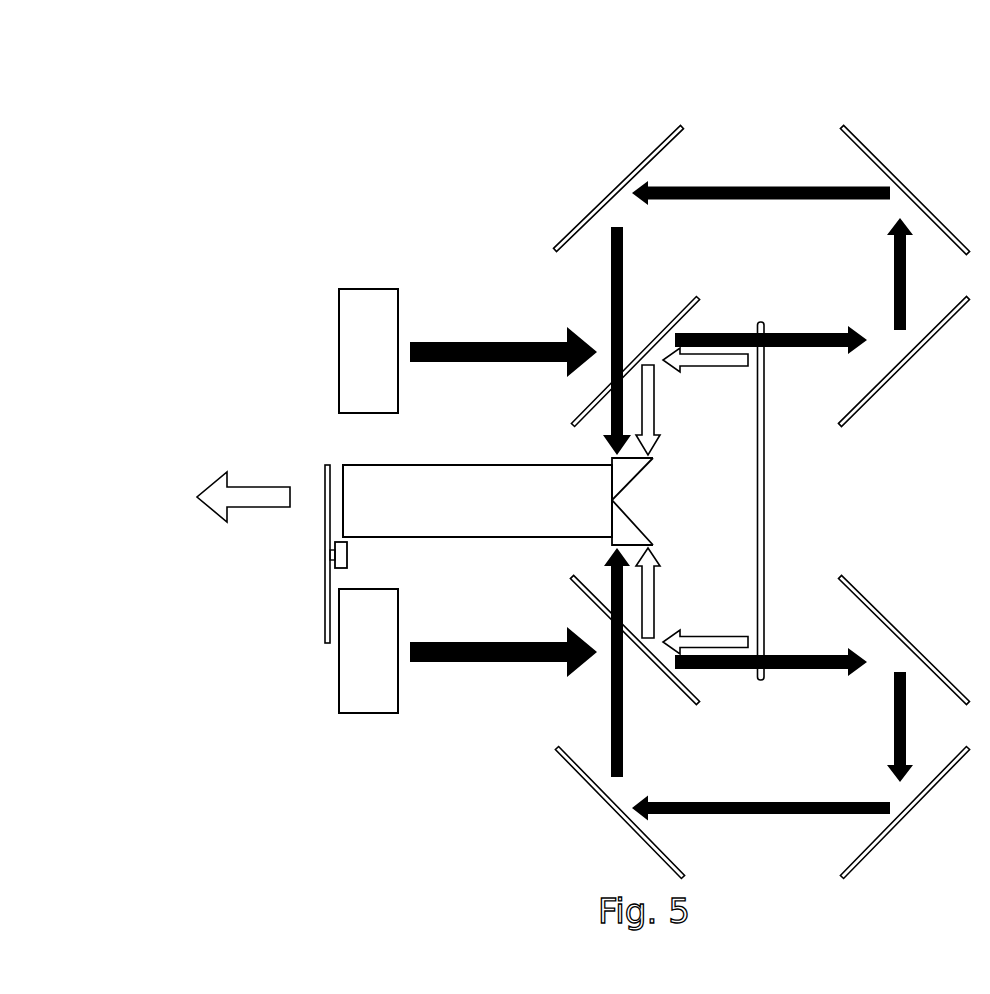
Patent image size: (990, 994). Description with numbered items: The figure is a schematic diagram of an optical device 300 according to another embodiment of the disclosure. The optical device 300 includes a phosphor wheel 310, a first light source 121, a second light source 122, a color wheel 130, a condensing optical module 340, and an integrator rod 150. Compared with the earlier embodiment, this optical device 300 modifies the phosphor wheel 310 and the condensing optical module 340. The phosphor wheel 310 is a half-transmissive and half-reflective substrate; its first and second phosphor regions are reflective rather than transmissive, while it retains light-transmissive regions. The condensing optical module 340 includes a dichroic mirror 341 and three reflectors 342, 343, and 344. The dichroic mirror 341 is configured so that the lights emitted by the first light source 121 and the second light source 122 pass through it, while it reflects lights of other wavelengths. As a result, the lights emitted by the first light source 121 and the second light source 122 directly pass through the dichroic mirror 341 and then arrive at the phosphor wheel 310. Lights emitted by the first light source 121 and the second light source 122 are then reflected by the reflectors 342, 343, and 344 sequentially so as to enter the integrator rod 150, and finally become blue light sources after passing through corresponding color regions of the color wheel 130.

The optical device 300 is at (22, 46).
The first light source 121 is at (362, 302).
The second light source 122 is at (367, 697).
The color wheel 130 is at (325, 512).
The integrator rod 150 is at (473, 498).
The phosphor wheel 310 is at (767, 502).
The condensing optical module 340 is at (553, 73).
The dichroic mirror 341 is at (675, 314).
The reflector 342 is at (892, 358).
The reflector 343 is at (887, 172).
The reflector 344 is at (597, 203).